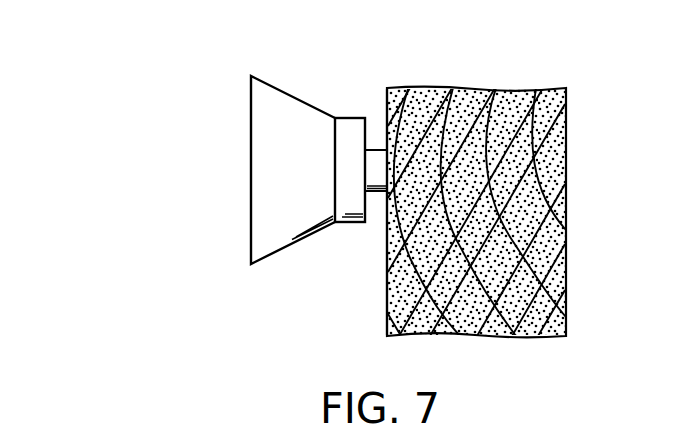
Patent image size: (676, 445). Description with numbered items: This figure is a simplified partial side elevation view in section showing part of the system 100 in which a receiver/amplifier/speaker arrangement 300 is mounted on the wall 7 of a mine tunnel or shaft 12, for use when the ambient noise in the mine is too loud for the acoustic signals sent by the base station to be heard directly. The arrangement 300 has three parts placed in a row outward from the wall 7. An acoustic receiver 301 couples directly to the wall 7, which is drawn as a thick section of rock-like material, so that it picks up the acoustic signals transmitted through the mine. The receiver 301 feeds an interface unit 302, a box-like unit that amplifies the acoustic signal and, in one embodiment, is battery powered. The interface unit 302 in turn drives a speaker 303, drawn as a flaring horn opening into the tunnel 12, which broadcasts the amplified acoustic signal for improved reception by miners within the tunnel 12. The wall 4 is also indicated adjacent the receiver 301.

The system 100 is at (104, 32).
The mine tunnel 12 is at (113, 188).
The receiver/amplifier/speaker arrangement 300 is at (247, 306).
The speaker 303 is at (250, 243).
The interface unit 302 is at (352, 117).
The acoustic receiver 301 is at (376, 193).
The wall 4 is at (567, 228).
The wall 7 is at (387, 297).